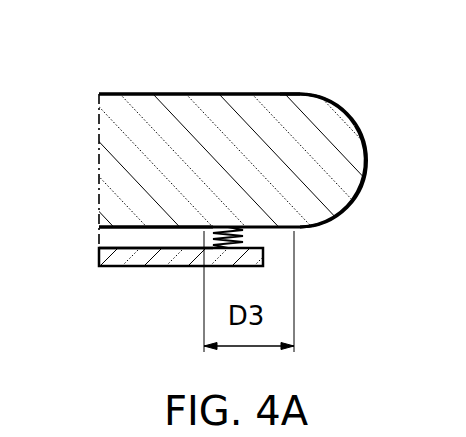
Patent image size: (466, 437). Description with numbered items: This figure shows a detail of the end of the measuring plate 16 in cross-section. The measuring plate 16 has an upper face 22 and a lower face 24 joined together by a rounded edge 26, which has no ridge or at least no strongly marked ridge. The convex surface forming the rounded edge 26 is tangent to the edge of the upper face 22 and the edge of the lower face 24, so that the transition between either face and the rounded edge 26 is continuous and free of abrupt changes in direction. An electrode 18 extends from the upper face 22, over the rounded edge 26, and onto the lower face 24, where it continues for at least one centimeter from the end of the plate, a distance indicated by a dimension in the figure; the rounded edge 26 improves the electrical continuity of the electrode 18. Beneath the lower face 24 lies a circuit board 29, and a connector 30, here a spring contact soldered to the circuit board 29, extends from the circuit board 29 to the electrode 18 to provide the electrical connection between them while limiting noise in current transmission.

The measuring plate 16 is at (99, 173).
The electrode 18 is at (302, 95).
The upper face 22 is at (143, 93).
The lower face 24 is at (133, 228).
The rounded edge 26 is at (360, 125).
The circuit board 29 is at (172, 253).
The electrical connector 30 is at (231, 237).